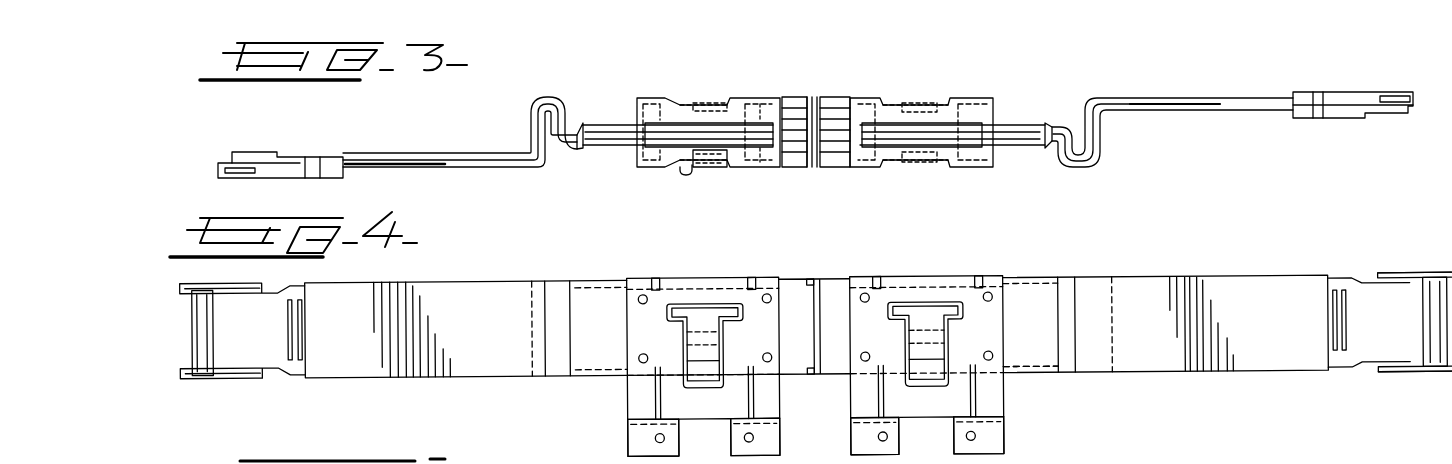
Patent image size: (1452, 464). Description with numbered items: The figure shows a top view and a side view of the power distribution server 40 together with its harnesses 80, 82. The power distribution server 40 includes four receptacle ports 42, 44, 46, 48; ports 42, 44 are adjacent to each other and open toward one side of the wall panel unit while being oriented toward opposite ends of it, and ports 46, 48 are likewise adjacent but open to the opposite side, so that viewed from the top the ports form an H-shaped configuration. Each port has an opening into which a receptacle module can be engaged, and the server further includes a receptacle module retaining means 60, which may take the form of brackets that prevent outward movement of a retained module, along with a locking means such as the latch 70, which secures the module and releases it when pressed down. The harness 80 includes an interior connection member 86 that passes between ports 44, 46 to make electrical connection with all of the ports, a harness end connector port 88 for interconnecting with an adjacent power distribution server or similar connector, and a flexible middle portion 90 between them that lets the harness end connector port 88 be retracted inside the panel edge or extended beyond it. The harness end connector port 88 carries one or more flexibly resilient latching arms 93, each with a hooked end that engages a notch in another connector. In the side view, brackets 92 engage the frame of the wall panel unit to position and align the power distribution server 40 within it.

In FIG. 3, the power distribution server 40 is at (785, 78).
In FIG. 4, the power distribution server 40 is at (812, 275).
In FIG. 3, the receptacle port 42 is at (800, 168).
In FIG. 4, the receptacle port 42 is at (795, 279).
In FIG. 3, the receptacle port 44 is at (846, 168).
In FIG. 4, the receptacle port 44 is at (842, 279).
In FIG. 3, the receptacle port 46 is at (836, 97).
In FIG. 3, the receptacle port 48 is at (800, 96).
In FIG. 3, the receptacle module retaining means 60 is at (681, 170).
In FIG. 3, the latch 70 is at (709, 168).
In FIG. 4, the latch 70 is at (709, 388).
In FIG. 3, the harness 80 is at (1232, 105).
In FIG. 4, the harness 80 is at (1227, 320).
In FIG. 3, the harness 82 is at (558, 95).
In FIG. 4, the harness 82 is at (505, 279).
In FIG. 3, the interior connection member 86 is at (1015, 146).
In FIG. 4, the interior connection member 86 is at (1033, 373).
In FIG. 3, the harness end connector port 88 is at (1362, 120).
In FIG. 4, the harness end connector port 88 is at (1395, 373).
In FIG. 3, the flexible middle portion 90 is at (1198, 112).
In FIG. 4, the flexible middle portion 90 is at (1200, 373).
In FIG. 4, the brackets 92 is at (650, 455).
In FIG. 4, the latching arms 93 is at (1447, 275).